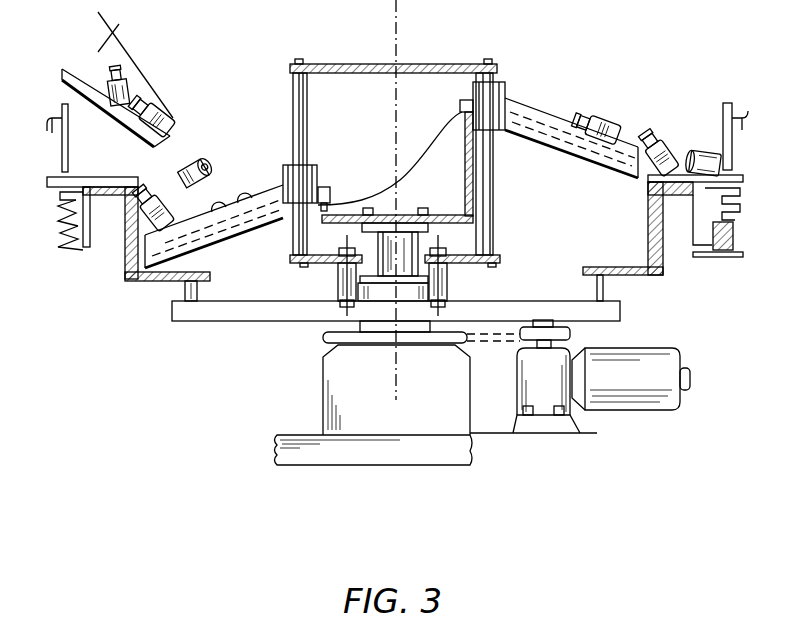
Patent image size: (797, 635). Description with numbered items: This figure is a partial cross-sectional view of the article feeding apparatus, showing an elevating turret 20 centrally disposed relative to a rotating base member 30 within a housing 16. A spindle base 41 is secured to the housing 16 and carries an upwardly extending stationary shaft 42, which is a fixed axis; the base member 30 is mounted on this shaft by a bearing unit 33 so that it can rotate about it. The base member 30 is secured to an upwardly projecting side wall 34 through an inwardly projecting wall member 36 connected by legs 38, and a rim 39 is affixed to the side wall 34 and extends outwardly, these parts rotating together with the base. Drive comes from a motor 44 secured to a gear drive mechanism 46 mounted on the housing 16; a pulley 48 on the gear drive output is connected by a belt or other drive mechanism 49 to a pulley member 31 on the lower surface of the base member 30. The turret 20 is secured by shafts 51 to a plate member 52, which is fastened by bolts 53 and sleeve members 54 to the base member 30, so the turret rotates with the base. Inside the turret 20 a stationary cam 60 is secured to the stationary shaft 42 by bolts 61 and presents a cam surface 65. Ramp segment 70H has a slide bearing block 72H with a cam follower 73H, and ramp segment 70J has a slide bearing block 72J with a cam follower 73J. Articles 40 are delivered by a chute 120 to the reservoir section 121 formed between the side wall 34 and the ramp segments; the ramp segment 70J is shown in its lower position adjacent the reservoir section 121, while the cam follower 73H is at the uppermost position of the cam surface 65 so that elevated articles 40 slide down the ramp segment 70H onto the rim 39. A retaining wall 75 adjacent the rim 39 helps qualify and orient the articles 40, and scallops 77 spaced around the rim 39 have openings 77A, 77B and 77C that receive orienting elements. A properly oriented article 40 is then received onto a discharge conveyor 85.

The housing 16 is at (440, 453).
The elevating turret 20 is at (335, 64).
The base member 30 is at (540, 310).
The pulley member 31 is at (325, 338).
The bearing unit 33 is at (333, 310).
The upwardly projecting side wall 34 is at (663, 240).
The inwardly projecting wall member 36 is at (150, 282).
The legs 38 is at (185, 290).
The rim 39 is at (668, 183).
The articles 40 is at (150, 100).
The spindle base 41 is at (392, 390).
The stationary shaft 42 is at (387, 257).
The motor 44 is at (615, 382).
The gear drive mechanism 46 is at (545, 412).
The pulley 48 is at (570, 330).
The belt or other drive mechanism 49 is at (520, 340).
The shafts 51 is at (493, 197).
The plate member 52 is at (493, 246).
The bolts 53 is at (440, 248).
The sleeve members 54 is at (445, 275).
The stationary cam 60 is at (450, 193).
The bolts 61 is at (418, 212).
The cam surface 65 is at (424, 145).
The ramp segment 70H is at (555, 118).
The ramp segment 70J is at (205, 242).
The slide bearing block 72H is at (508, 82).
The slide bearing block 72J is at (290, 165).
The cam follower 73H is at (465, 100).
The cam follower 73J is at (357, 158).
The retaining wall 75 is at (68, 152).
The scallops 77 is at (86, 227).
The opening 77A is at (70, 192).
The opening 77B is at (66, 211).
The opening 77C is at (70, 224).
The discharge conveyor 85 is at (720, 256).
The chute 120 is at (119, 26).
The reservoir section 121 is at (200, 213).